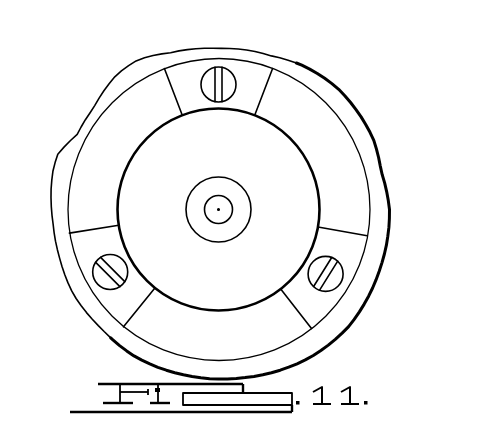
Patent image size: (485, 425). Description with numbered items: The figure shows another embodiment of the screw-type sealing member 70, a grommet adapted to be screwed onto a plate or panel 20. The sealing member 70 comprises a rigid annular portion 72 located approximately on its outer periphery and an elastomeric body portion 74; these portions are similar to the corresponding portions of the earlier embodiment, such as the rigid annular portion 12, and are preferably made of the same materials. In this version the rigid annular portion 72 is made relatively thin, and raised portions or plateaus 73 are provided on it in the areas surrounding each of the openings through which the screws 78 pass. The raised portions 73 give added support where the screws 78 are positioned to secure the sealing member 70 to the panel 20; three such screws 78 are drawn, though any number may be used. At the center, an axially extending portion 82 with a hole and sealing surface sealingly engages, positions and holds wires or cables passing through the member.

The rigid annular portion 12 is at (5, 235).
The panel 20 is at (355, 118).
The sealing member 70 is at (82, 334).
The rigid annular portion 72 is at (108, 131).
The raised portions 73 is at (265, 82).
The elastomeric body portion 74 is at (177, 138).
The screws 78 is at (227, 78).
The axially extending portion 82 is at (249, 221).